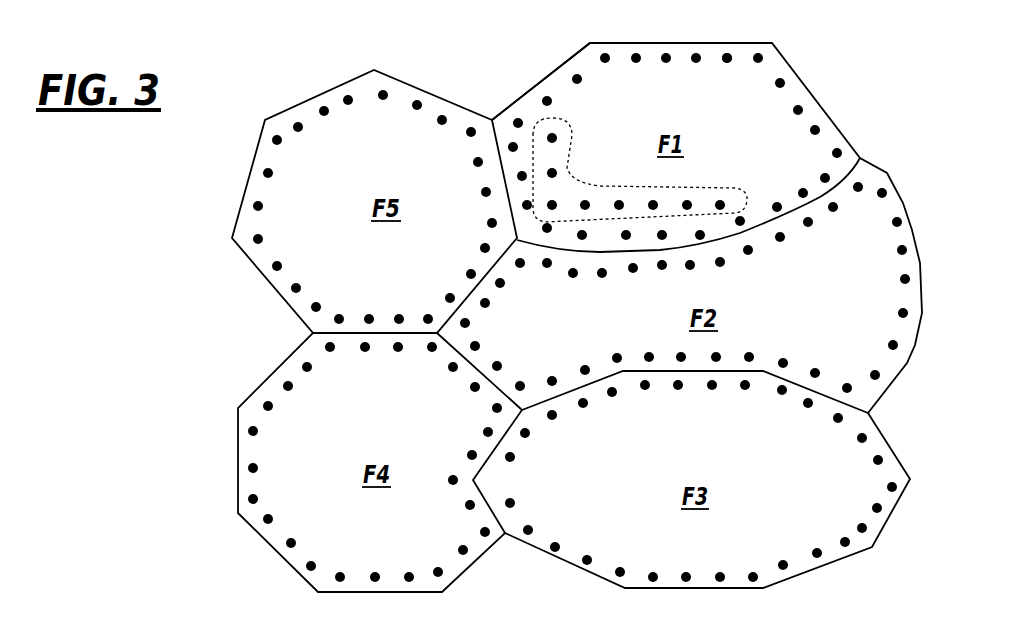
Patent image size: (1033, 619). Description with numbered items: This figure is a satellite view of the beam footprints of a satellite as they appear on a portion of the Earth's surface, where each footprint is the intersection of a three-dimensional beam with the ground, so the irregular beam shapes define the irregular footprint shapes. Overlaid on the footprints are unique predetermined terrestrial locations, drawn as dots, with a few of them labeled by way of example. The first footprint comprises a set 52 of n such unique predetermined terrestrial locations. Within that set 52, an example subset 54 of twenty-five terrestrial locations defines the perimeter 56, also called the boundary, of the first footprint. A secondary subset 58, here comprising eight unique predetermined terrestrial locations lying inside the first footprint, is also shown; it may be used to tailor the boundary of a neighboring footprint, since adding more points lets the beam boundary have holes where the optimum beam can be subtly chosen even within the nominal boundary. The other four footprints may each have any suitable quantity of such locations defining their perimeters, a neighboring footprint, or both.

The set of unique predetermined terrestrial locations 52 is at (566, 63).
The subset of terrestrial locations 54 is at (724, 69).
The perimeter 56 is at (528, 92).
The secondary subset 58 is at (575, 127).